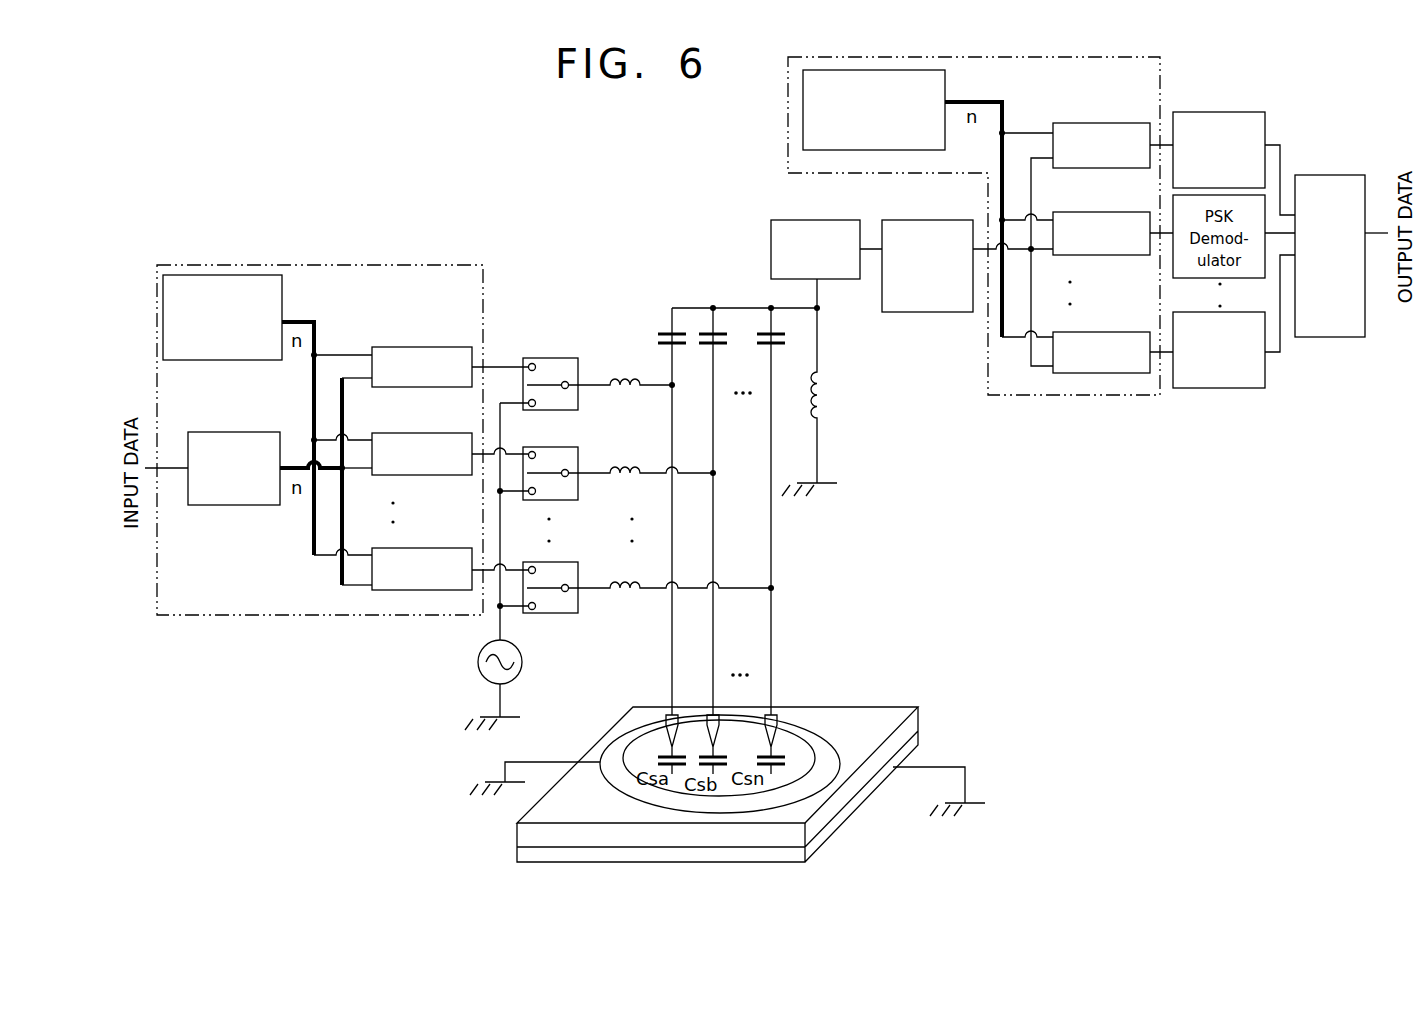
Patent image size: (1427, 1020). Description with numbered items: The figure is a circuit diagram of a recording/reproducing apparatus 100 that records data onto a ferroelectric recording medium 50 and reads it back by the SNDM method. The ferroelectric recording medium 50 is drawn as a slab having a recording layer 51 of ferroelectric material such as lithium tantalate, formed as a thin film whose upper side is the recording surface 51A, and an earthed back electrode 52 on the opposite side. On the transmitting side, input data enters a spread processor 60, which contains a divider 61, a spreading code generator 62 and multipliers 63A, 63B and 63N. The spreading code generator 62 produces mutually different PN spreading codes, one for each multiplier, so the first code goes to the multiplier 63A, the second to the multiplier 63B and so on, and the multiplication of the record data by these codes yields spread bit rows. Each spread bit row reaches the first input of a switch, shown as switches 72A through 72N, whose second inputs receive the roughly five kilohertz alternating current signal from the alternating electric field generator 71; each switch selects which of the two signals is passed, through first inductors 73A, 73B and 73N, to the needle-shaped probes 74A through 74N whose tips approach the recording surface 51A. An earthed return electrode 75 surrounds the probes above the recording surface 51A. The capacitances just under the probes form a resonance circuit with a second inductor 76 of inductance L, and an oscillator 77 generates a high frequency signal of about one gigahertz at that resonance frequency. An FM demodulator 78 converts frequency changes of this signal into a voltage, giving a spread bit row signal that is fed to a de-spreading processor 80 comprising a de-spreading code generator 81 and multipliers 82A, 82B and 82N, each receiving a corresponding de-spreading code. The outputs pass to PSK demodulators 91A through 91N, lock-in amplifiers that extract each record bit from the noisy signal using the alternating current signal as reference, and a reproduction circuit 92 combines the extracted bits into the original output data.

The recording/reproducing apparatus 100 is at (481, 131).
The spread processor 60 is at (410, 265).
The divider 61 is at (235, 505).
The spreading code generator 62 is at (220, 360).
The multiplier 63A is at (437, 330).
The multiplier 63B is at (437, 416).
The multiplier 63N is at (437, 531).
The alternating electric field generator 71 is at (477, 676).
The switch 72A is at (548, 358).
The switch 72N is at (555, 613).
The first inductor 73A is at (620, 376).
The first inductor 73B is at (627, 464).
The first inductor 73N is at (627, 600).
The probe 74A is at (660, 718).
The probe 74N is at (780, 715).
The return electrode 75 is at (712, 798).
The second inductor 76 is at (825, 380).
The oscillator 77 is at (771, 221).
The FM demodulator 78 is at (902, 220).
The de-spreading processor 80 is at (1085, 395).
The de-spreading code generator 81 is at (945, 72).
The multiplier 82A is at (1107, 105).
The multiplier 82B is at (1107, 194).
The multiplier 82N is at (1087, 332).
The PSK demodulator 91A is at (1232, 112).
The PSK demodulator 91N is at (1227, 388).
The reproduction circuit 92 is at (1325, 175).
The ferroelectric recording medium 50 is at (749, 786).
The recording layer 51 is at (918, 707).
The recording surface 51A is at (792, 748).
The back electrode 52 is at (858, 800).